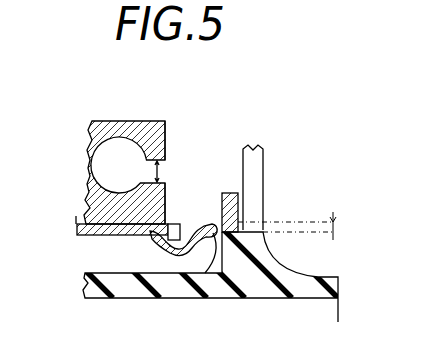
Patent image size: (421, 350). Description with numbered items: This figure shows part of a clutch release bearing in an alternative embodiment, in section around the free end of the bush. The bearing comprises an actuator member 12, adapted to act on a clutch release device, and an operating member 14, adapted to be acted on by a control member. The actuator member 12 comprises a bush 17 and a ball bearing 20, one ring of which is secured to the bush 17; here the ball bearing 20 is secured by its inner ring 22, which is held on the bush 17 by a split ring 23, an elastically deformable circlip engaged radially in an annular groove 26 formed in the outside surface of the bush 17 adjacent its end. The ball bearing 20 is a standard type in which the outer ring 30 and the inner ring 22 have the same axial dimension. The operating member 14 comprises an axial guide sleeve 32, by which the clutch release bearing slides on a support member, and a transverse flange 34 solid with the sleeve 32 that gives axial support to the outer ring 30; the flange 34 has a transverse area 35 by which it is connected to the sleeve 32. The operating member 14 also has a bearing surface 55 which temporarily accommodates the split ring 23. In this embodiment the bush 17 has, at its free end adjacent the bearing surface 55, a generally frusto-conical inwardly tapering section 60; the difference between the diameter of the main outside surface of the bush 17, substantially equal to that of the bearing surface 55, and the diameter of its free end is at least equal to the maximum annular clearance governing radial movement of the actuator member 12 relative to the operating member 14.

The actuator member 12 is at (73, 231).
The operating member 14 is at (342, 292).
The bush 17 is at (90, 238).
The ball bearing 20 is at (175, 118).
The inner ring 22 is at (78, 223).
The split ring 23 is at (228, 192).
The annular groove 26 is at (167, 234).
The outer ring 30 is at (113, 128).
The axial guide sleeve 32 is at (117, 287).
The transverse flange 34 is at (265, 160).
The area 35 is at (265, 232).
The bearing surface 55 is at (236, 283).
The frusto-conical inwardly tapering section 60 is at (212, 224).